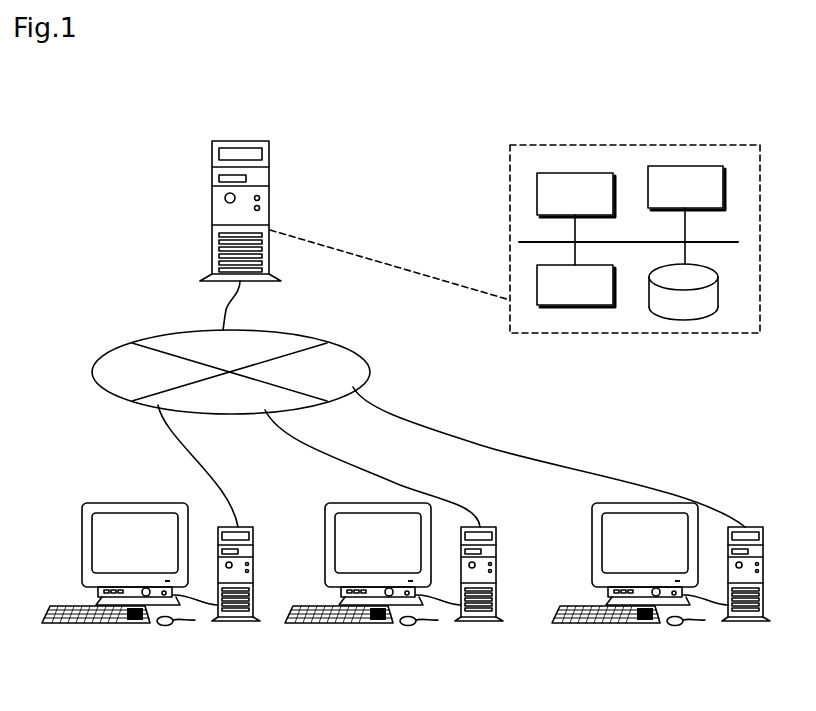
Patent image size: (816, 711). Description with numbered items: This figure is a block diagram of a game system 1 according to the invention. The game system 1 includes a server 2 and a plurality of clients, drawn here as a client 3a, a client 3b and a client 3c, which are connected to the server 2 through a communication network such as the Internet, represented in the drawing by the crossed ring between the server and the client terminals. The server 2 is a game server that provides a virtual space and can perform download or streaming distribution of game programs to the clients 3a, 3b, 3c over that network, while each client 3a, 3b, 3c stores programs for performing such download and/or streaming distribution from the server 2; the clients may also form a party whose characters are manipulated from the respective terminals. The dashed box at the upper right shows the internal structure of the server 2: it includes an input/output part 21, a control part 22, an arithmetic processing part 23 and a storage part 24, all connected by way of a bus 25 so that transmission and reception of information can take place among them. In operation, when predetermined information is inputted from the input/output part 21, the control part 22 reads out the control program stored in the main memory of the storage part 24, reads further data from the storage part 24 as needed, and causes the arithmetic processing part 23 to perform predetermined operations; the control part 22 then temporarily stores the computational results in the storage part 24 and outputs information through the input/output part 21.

The game system 1 is at (118, 198).
The server 2 is at (270, 172).
The client 3a is at (235, 621).
The client 3b is at (478, 621).
The client 3c is at (745, 621).
The input/output part 21 is at (577, 178).
The control part 22 is at (697, 190).
The arithmetic processing part 23 is at (555, 280).
The storage part 24 is at (668, 282).
The bus 25 is at (543, 240).